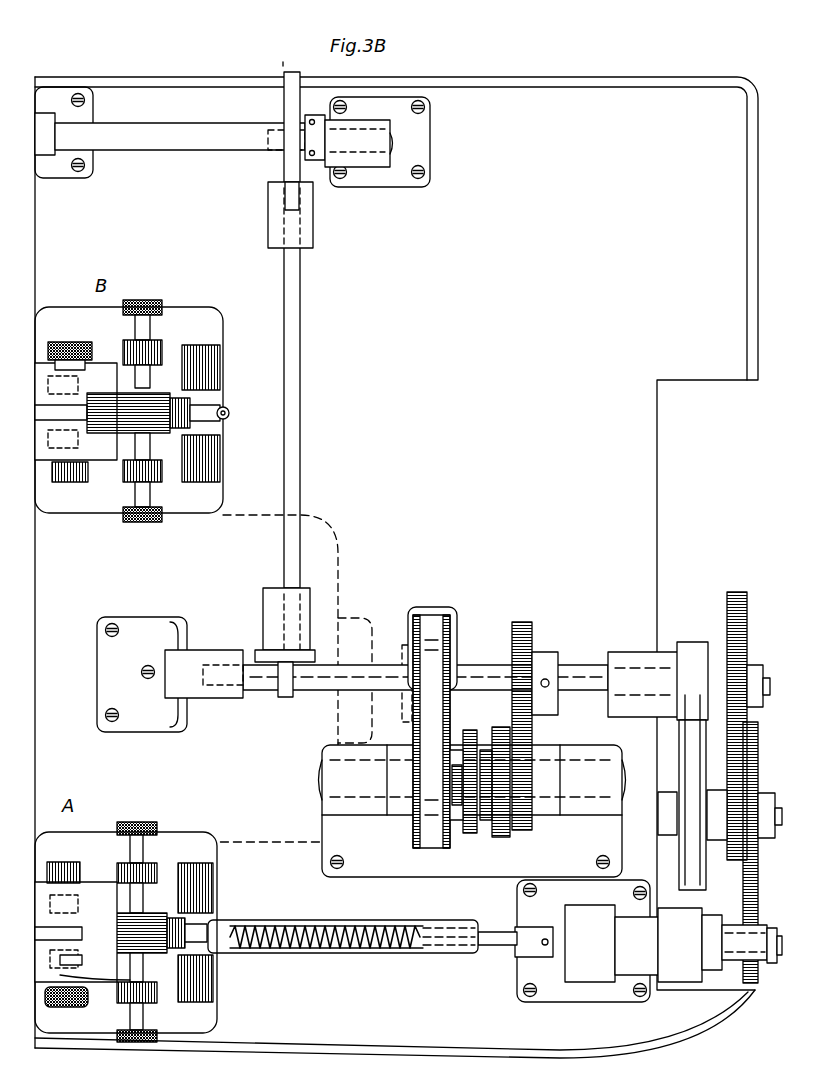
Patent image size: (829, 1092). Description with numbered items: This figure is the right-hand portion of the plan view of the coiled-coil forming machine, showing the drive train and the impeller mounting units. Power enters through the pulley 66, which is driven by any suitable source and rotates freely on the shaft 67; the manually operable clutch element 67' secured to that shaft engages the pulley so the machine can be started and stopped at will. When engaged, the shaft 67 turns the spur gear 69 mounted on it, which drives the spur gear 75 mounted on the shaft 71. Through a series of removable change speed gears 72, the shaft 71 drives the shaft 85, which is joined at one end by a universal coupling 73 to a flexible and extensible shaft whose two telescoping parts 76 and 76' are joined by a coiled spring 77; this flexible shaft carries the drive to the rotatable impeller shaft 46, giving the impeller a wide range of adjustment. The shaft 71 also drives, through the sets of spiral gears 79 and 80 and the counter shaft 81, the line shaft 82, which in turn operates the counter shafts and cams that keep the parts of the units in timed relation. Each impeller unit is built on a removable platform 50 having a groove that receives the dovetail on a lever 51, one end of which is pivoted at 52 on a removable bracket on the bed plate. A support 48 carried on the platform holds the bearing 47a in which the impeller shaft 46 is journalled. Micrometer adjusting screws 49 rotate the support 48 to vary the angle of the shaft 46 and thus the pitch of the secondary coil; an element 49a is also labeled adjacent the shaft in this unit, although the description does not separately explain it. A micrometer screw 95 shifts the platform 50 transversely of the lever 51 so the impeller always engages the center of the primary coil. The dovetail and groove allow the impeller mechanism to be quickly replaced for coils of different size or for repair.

The line shaft 82 is at (198, 152).
The counter shaft 81 is at (303, 378).
The spiral gears 80 is at (312, 186).
The bearing 47a is at (150, 913).
The spiral gears 79 is at (272, 652).
The shaft 71 is at (468, 665).
The shaft 67 is at (444, 811).
The pulley 66 is at (455, 840).
The clutch element 67' is at (471, 764).
The spur gear 69 is at (512, 832).
The spur gear 75 is at (532, 626).
The change speed gears 72 is at (765, 783).
The shaft 85 is at (548, 945).
The universal coupling 73 is at (546, 940).
The flexible shaft part 76 is at (376, 920).
The flexible shaft part 76' is at (343, 924).
The coiled spring 77 is at (338, 925).
The micrometer adjusting screws 49 is at (155, 826).
The support 48 is at (60, 930).
The rotatable shaft 46 is at (65, 930).
The removable platform 50 is at (100, 900).
The lever 51 is at (213, 900).
The pin 49a is at (87, 958).
The micrometer screw 95 is at (64, 1006).
The pivot 52 is at (195, 1012).